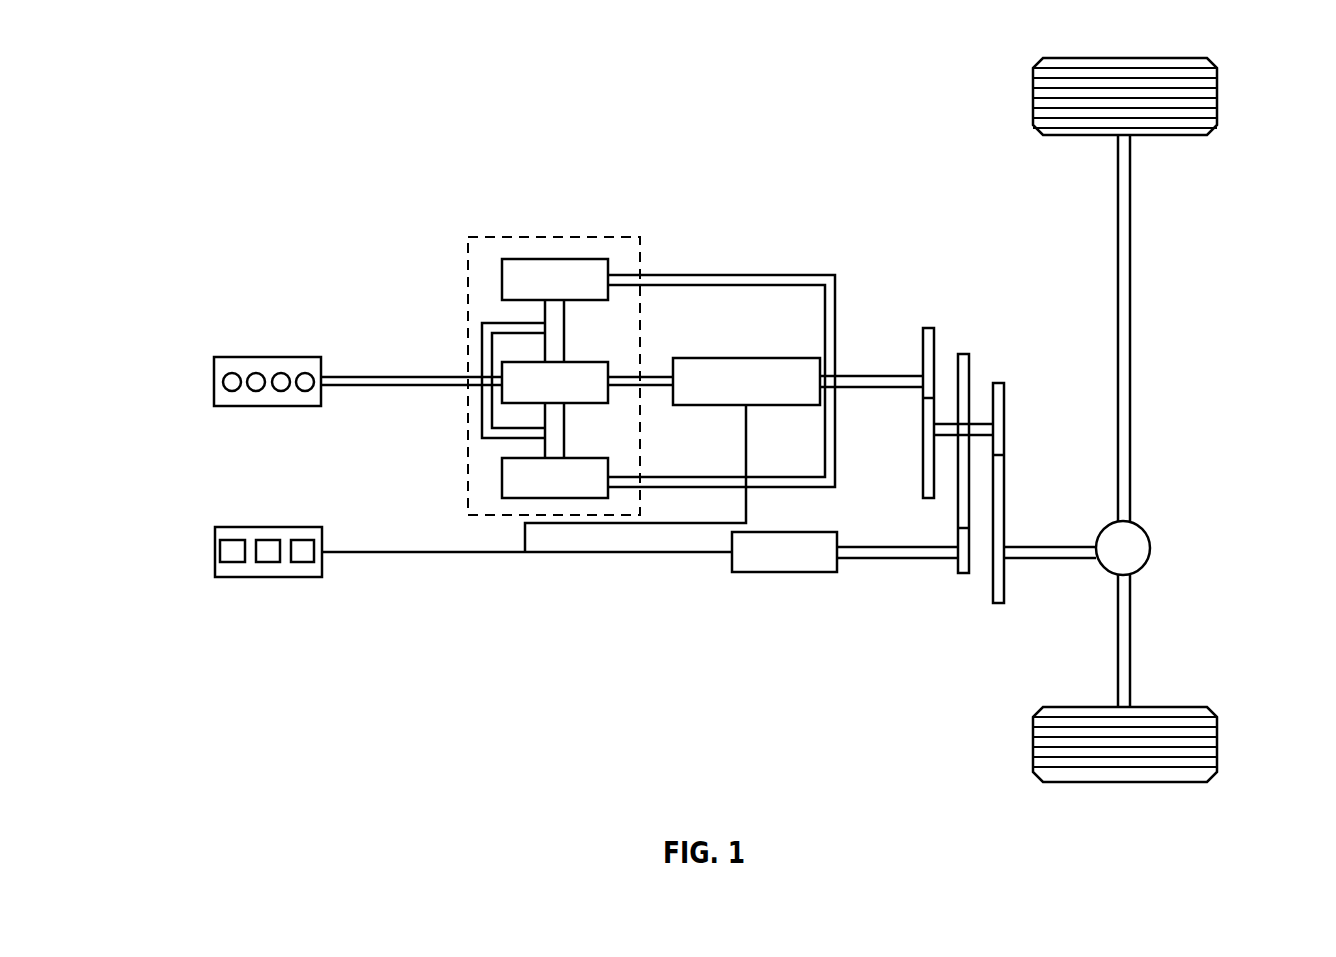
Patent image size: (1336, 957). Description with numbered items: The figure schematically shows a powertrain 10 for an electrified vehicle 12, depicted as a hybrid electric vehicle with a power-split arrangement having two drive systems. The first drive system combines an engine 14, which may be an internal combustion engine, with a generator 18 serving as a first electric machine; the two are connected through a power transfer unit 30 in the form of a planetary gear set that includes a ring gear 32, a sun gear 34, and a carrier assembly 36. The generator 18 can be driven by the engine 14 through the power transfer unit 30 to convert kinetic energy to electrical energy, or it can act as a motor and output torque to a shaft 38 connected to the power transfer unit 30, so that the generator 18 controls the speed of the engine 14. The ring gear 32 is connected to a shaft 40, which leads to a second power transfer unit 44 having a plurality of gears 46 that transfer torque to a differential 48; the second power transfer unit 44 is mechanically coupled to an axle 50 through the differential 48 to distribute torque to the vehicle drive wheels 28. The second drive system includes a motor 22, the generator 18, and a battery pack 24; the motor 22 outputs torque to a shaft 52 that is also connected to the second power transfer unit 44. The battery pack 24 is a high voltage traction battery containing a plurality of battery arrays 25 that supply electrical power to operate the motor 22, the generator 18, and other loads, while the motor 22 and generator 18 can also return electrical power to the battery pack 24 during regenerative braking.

The powertrain 10 is at (176, 168).
The electrified vehicle 12 is at (768, 216).
The engine 14 is at (268, 406).
The generator 18 is at (765, 358).
The motor 22 is at (783, 572).
The battery pack 24 is at (437, 556).
The battery arrays 25 is at (232, 562).
The vehicle drive wheels 28 is at (1217, 100).
The power transfer unit 30 is at (540, 235).
The ring gear 32 is at (572, 259).
The sun gear 34 is at (582, 362).
The carrier assembly 36 is at (482, 413).
The shaft 38 is at (656, 377).
The shaft 40 is at (890, 387).
The second power transfer unit 44 is at (1018, 252).
The gears 46 is at (928, 328).
The differential 48 is at (1150, 548).
The axle 50 is at (1130, 452).
The shaft 52 is at (890, 560).